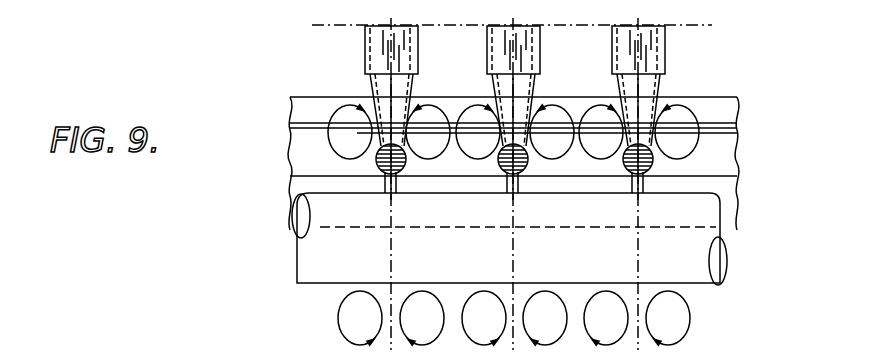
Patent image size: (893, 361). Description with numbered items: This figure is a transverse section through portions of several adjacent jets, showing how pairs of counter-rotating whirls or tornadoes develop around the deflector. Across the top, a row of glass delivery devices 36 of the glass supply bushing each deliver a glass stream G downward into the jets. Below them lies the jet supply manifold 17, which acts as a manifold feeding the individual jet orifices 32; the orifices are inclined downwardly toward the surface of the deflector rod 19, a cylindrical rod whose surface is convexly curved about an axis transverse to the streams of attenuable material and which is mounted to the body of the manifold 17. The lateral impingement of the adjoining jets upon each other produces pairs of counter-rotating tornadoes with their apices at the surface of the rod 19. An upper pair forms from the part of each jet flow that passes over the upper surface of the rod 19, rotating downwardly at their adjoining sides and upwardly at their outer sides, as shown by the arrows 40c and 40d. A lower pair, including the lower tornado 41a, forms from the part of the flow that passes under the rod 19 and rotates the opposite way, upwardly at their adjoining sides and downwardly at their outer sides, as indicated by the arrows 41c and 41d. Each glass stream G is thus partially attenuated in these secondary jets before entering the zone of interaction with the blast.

The jet supply manifold 17 is at (737, 101).
The deflector rod 19 is at (300, 257).
The jet orifice 32 is at (376, 165).
The glass delivery device 36 is at (365, 40).
The glass stream G is at (368, 81).
The arrow indicating rotation of upper tornado 40c is at (325, 123).
The arrow indicating rotation of upper tornado 40d is at (740, 129).
The arrow indicating rotation of lower tornado 41c is at (357, 291).
The arrow indicating rotation of lower tornado 41d is at (422, 291).
The lower tornado 41a is at (600, 291).